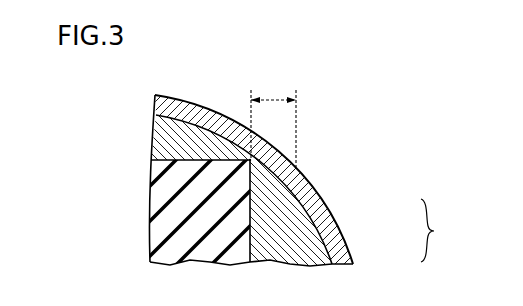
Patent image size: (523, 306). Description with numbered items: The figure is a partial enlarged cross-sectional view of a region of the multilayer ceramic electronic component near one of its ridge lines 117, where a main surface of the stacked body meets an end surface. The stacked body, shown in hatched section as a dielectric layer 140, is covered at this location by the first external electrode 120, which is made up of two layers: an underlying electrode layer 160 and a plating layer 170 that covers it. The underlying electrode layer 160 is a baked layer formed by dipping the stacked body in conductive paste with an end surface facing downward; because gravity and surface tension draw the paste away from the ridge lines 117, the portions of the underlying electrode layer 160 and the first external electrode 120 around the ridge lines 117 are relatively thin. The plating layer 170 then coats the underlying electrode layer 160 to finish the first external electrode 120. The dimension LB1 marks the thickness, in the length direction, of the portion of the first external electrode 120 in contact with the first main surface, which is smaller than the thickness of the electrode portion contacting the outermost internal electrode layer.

The ridge line 117 is at (252, 161).
The first external electrode 120 is at (448, 230).
The dielectric layer 140 is at (160, 203).
The underlying electrode layer 160 is at (287, 212).
The plating layer 170 is at (333, 245).
The thickness LB1 is at (272, 98).